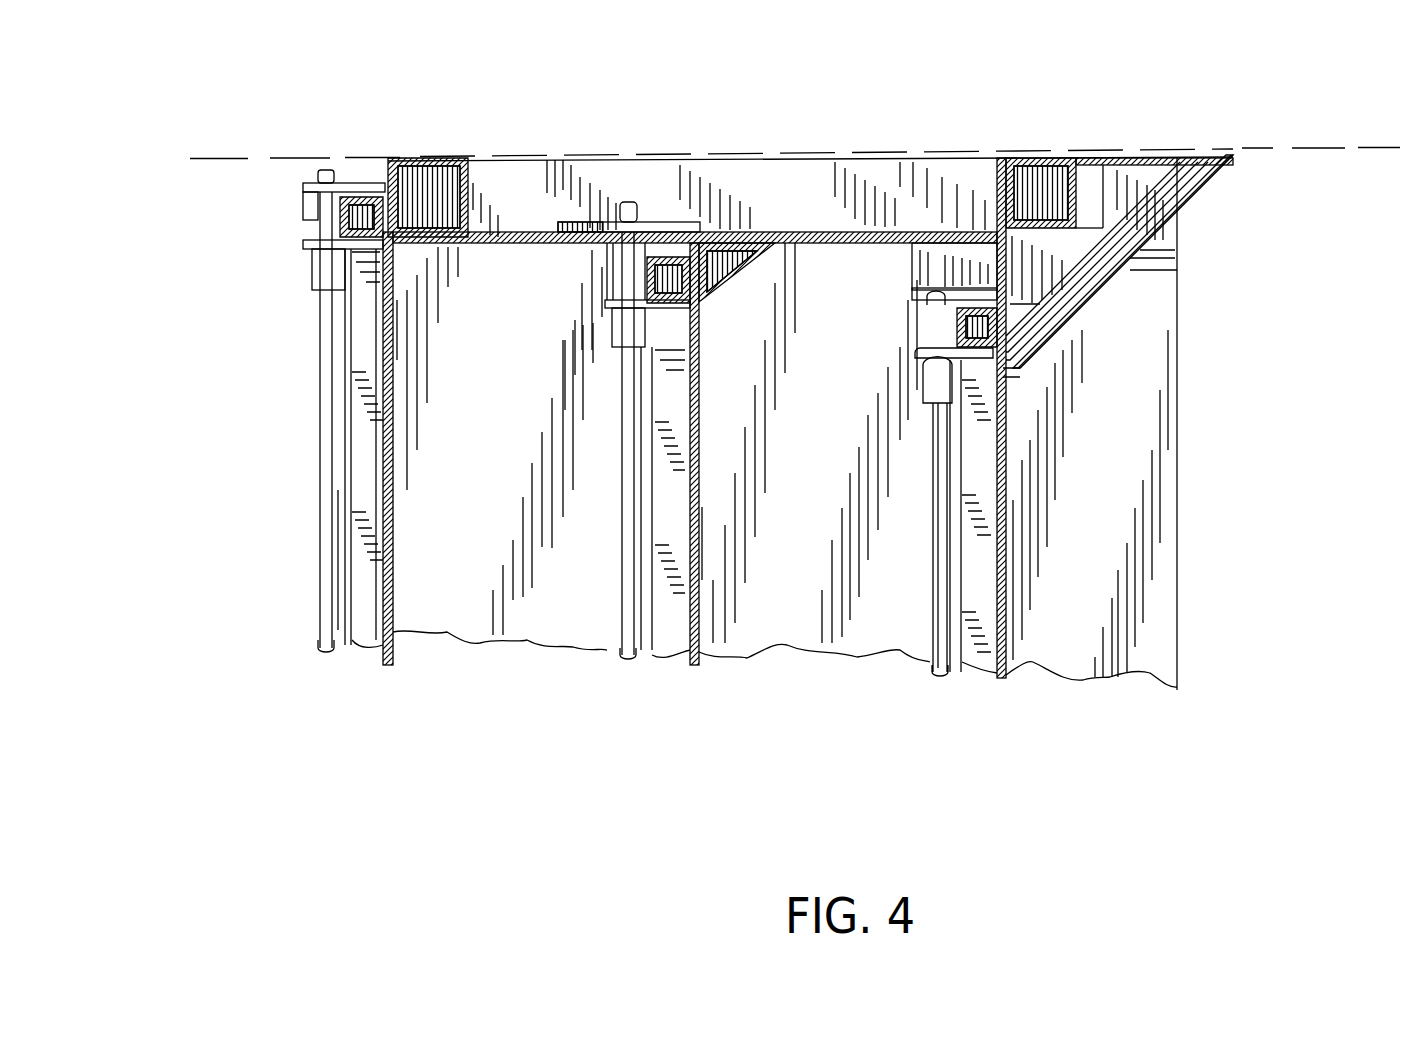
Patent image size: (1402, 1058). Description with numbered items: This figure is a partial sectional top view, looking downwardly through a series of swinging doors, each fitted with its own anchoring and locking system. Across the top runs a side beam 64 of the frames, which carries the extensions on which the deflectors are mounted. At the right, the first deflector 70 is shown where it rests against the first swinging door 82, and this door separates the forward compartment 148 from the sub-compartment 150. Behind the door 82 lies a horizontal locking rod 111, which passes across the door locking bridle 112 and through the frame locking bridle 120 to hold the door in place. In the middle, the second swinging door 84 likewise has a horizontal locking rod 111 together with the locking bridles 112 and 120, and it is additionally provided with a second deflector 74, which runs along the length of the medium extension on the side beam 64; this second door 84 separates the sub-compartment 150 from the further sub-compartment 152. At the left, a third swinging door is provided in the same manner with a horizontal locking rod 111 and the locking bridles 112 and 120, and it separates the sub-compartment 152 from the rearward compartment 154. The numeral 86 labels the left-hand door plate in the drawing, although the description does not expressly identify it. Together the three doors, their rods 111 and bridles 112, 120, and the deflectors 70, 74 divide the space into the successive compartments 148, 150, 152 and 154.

The side beam 64 is at (680, 262).
The first deflector 70 is at (1183, 190).
The second deflector 74 is at (773, 237).
The swinging door 82 is at (977, 657).
The second swinging door 84 is at (677, 640).
The partition plate 86 is at (380, 643).
The horizontal locking rod 111 is at (337, 623).
The door locking bridle 112 is at (305, 240).
The frame locking bridle 120 is at (355, 182).
The forward compartment 148 is at (1080, 610).
The sub-compartment 150 is at (783, 610).
The sub-compartment 152 is at (550, 613).
The rearward compartment 154 is at (278, 567).